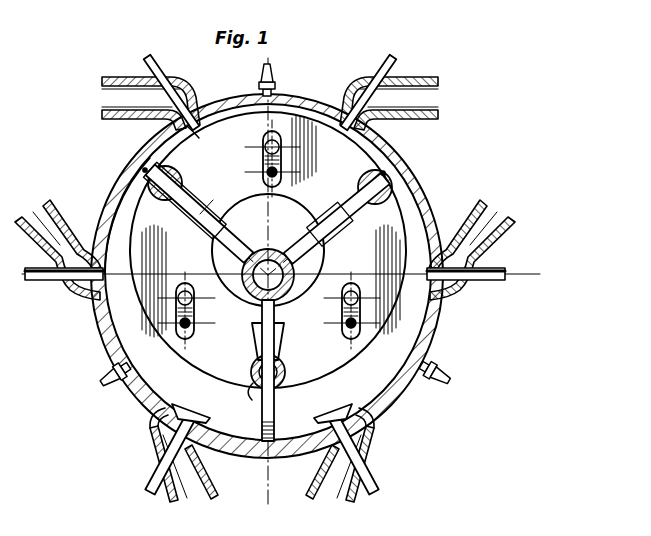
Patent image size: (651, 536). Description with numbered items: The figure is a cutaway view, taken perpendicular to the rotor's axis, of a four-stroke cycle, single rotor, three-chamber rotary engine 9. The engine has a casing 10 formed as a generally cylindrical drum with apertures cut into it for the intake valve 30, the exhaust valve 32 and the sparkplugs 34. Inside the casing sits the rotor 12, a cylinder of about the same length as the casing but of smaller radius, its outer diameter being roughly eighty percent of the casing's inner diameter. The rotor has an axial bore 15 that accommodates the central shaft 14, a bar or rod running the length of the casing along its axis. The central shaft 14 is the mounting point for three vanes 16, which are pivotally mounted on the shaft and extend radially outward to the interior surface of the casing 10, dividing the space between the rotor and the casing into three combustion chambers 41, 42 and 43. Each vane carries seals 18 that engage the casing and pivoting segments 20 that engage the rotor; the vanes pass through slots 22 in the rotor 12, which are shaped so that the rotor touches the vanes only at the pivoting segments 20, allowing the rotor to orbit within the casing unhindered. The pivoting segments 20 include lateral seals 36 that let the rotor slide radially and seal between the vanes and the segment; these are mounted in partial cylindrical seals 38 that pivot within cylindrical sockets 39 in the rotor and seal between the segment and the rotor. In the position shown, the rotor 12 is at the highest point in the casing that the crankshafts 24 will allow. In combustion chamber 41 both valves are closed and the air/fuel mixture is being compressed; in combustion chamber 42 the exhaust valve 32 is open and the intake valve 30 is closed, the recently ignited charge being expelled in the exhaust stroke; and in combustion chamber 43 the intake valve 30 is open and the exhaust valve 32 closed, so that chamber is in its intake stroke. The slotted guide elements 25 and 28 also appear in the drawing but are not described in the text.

The rotary engine 9 is at (66, 133).
The casing 10 is at (447, 230).
The rotor 12 is at (362, 260).
The central shaft 14 is at (198, 221).
The axial bore 15 is at (300, 230).
The vanes 16 is at (200, 214).
The seals 18 is at (143, 170).
The pivoting segments 20 is at (174, 189).
The slots 22 is at (205, 222).
The crankshafts 24 is at (278, 180).
The guide slot 25 is at (352, 283).
The slider 28 is at (290, 158).
The intake valve 30 is at (162, 143).
The exhaust valve 32 is at (386, 133).
The sparkplugs 34 is at (280, 79).
The lateral seals 36 is at (281, 382).
The partial cylindrical seals 38 is at (253, 356).
The cylindrical sockets 39 is at (253, 383).
The combustion chamber 41 is at (152, 157).
The combustion chamber 42 is at (400, 352).
The combustion chamber 43 is at (178, 378).